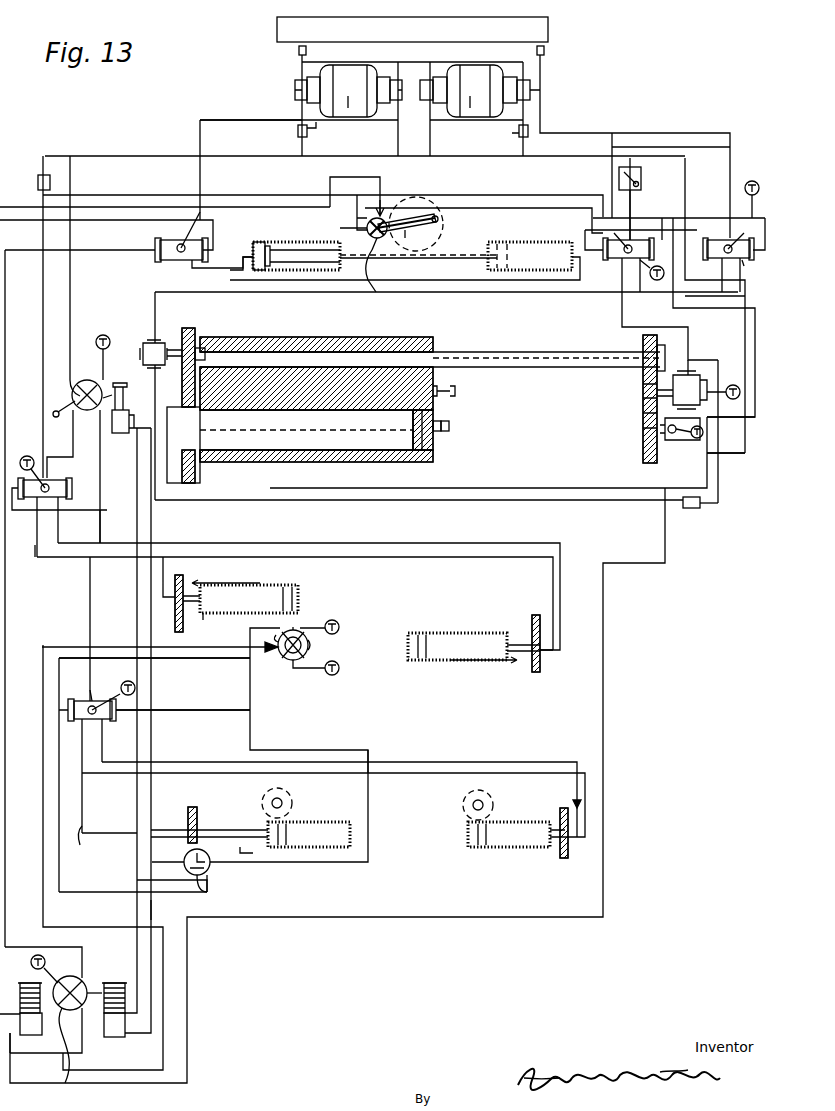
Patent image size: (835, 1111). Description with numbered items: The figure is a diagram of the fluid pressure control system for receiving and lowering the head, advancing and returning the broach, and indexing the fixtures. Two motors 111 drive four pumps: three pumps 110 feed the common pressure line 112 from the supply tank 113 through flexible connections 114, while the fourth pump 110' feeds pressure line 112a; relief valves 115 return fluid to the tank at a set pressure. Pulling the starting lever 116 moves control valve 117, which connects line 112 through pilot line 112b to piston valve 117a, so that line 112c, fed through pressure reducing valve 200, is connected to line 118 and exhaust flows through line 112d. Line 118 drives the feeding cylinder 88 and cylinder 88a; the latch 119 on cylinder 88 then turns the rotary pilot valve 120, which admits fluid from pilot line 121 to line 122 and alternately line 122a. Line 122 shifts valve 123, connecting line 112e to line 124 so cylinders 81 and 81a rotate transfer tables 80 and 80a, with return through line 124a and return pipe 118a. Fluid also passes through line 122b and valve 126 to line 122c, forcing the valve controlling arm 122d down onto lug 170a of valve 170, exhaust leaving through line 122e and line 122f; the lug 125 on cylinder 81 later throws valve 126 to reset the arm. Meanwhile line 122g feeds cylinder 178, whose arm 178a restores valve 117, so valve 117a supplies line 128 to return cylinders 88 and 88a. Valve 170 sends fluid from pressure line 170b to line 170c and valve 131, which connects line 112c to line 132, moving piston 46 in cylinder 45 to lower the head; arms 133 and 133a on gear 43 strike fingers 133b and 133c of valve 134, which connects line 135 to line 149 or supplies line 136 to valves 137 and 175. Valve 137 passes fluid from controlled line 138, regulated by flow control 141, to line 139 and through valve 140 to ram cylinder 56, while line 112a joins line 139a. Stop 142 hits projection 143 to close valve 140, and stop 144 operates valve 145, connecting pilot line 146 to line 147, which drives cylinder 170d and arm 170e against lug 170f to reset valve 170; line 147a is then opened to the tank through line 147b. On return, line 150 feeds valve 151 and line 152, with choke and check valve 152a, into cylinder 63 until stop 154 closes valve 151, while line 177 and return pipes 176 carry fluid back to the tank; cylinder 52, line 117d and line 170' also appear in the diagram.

The supply tank 113 is at (548, 30).
The telescopic or flexible connections 114 is at (299, 51).
The pumps 110 is at (348, 90).
The fourth pump 110' is at (504, 91).
The motors 111 is at (348, 108).
The relief valves 115 is at (307, 136).
The pressure line 112 is at (265, 162).
The pressure line 112a is at (642, 148).
The pilot line 112b is at (100, 478).
The line 112c is at (120, 190).
The line 112d is at (73, 433).
The line 112e is at (92, 680).
The pressure reducing valve 200 is at (38, 183).
The line 170c is at (105, 224).
The valve 131 is at (163, 258).
The line 132 is at (210, 268).
The line 135 is at (350, 184).
The finger 133c is at (390, 195).
The arm 133 is at (440, 221).
The arm 133a is at (417, 239).
The finger 133b is at (380, 258).
The gear 43 is at (440, 243).
The valve 134 is at (387, 276).
The line 149 is at (488, 194).
The line 136 is at (560, 212).
The piston 46 is at (248, 240).
The cylinder 45 is at (295, 244).
The cylinder 52 is at (535, 243).
The line 150 is at (493, 295).
The return pipes 176 is at (593, 136).
The flow control means 141 is at (641, 175).
The controlled pressure line 138 is at (630, 200).
The valve 137 is at (610, 260).
The line 177 is at (640, 292).
The line 139a is at (717, 262).
The valve 175 is at (756, 268).
The pilot pressure line 146 is at (735, 300).
The line 139 is at (618, 315).
The valve 151 is at (144, 338).
The stop 154 is at (200, 345).
The cylinder 63 is at (340, 350).
The line 152 is at (270, 500).
The ram cylinder 56 is at (440, 380).
The stop 142 is at (455, 391).
The second stop 144 is at (449, 426).
The projection 143 is at (655, 393).
The valve 140 is at (706, 384).
The valve 145 is at (672, 440).
The line 147b is at (688, 440).
The line 147 is at (738, 453).
The choke and check valve 152a is at (690, 508).
The line 147a is at (665, 533).
The control valve 117 is at (72, 390).
The starting lever 116 is at (53, 412).
The arm 178a is at (128, 382).
The cylinder 178 is at (112, 430).
The line 122g is at (151, 520).
The piston valve 117a is at (30, 496).
The line 117d is at (72, 502).
The line 128 is at (63, 525).
The line 118 is at (60, 558).
The pilot line 121 is at (88, 605).
The feeding cylinder 88 is at (270, 584).
The pivoted finger or latch 119 is at (203, 620).
The rotary pilot valve 120 is at (290, 660).
The cylinder 88a is at (480, 640).
The return pipe 118a is at (154, 701).
The line 122 is at (165, 662).
The line 122a is at (172, 708).
The valve 123 is at (105, 722).
The line 124 is at (102, 752).
The line 124a is at (410, 778).
The line 122f is at (152, 793).
The transfer table 80 is at (282, 800).
The cylinder 81 is at (328, 822).
The lug 125 is at (253, 853).
The valve 126 is at (208, 868).
The transfer table 80a is at (483, 802).
The cylinder 81a is at (512, 822).
The line 122c is at (134, 882).
The line 122b is at (75, 892).
The line 122e is at (151, 906).
The valve controlling arm 122d is at (118, 980).
The pressure line 170b is at (60, 928).
The line 170' is at (43, 959).
The valve 170 is at (59, 981).
The lug 170a is at (88, 976).
The arm 170e is at (28, 980).
The cylinder 170d is at (30, 1035).
The lug 170f is at (66, 1085).